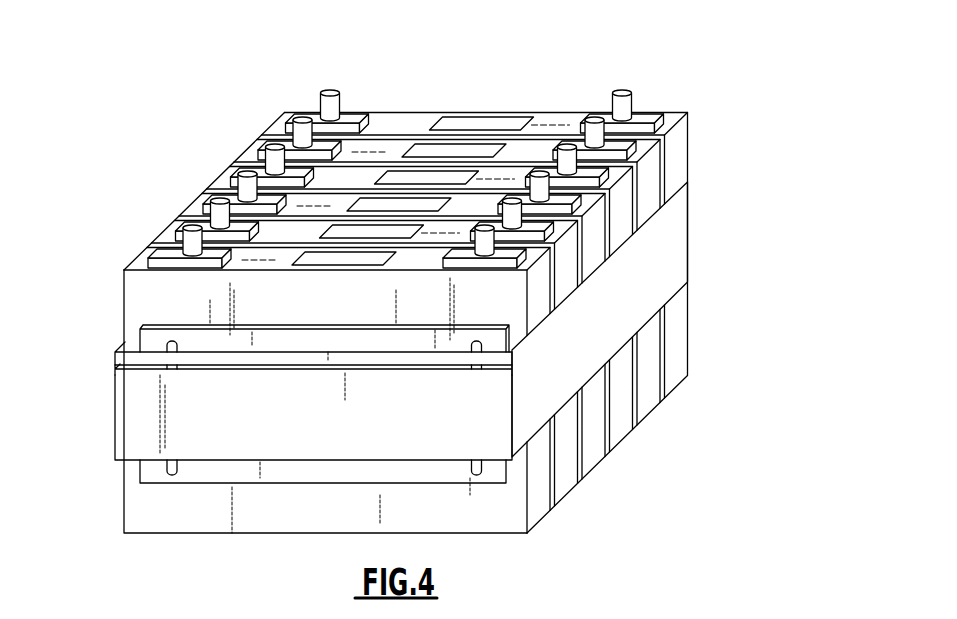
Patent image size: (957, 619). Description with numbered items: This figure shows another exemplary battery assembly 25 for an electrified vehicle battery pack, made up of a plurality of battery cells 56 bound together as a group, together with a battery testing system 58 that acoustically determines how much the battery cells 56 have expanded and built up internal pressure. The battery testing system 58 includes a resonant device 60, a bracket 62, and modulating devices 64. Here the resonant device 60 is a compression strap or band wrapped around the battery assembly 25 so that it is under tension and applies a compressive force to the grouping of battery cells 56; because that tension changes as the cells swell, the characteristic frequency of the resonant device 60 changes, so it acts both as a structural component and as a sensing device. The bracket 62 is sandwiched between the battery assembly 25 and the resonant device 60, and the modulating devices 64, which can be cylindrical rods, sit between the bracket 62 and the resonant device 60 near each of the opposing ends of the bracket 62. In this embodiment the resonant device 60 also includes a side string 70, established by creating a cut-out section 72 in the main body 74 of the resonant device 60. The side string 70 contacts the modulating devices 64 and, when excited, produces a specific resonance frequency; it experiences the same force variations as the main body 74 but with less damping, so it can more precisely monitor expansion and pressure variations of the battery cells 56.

The battery assembly 25 is at (705, 78).
The battery cells 56 is at (688, 146).
The battery testing system 58 is at (355, 372).
The resonant device 60 is at (309, 452).
The bracket 62 is at (385, 479).
The modulating devices 64 is at (172, 490).
The side string 70 is at (277, 358).
The cut-out section 72 is at (386, 368).
The main body 74 is at (313, 427).